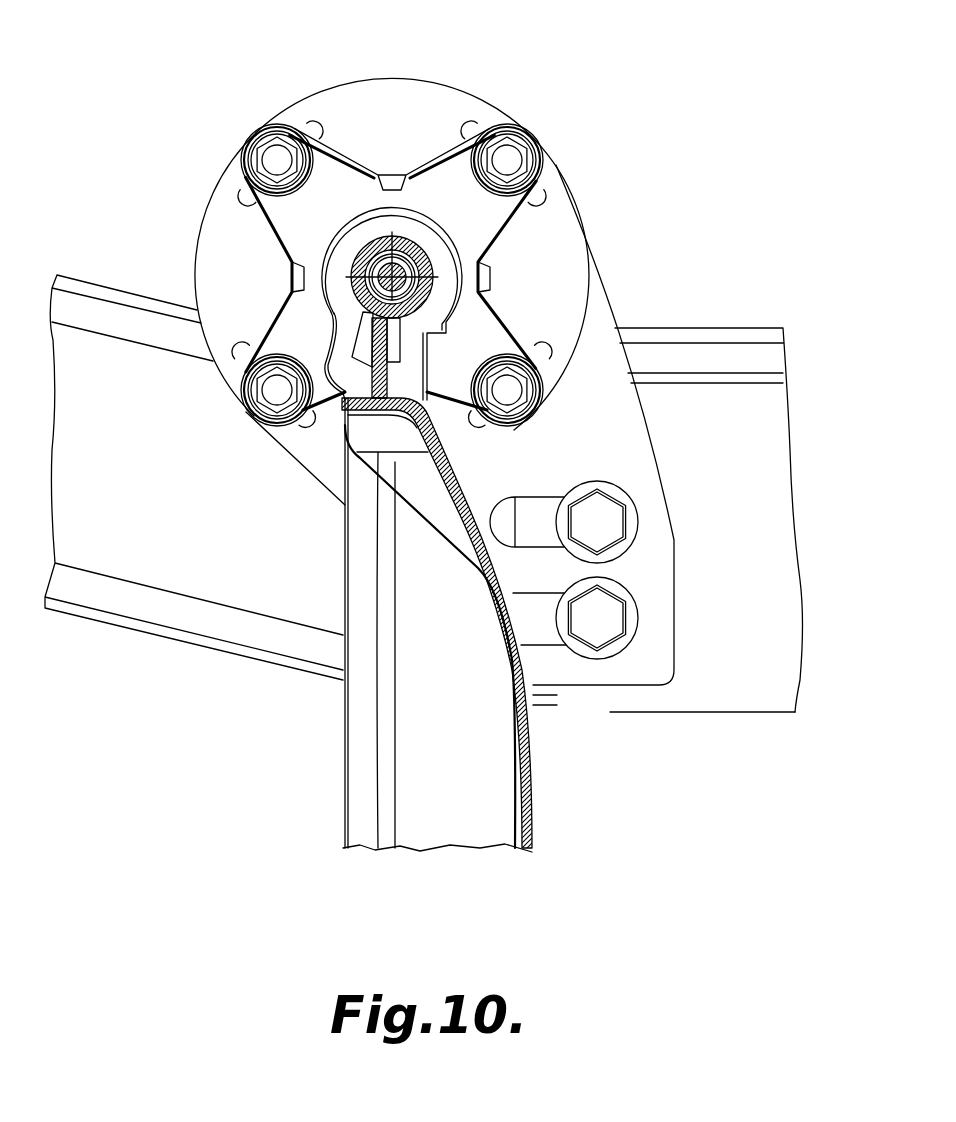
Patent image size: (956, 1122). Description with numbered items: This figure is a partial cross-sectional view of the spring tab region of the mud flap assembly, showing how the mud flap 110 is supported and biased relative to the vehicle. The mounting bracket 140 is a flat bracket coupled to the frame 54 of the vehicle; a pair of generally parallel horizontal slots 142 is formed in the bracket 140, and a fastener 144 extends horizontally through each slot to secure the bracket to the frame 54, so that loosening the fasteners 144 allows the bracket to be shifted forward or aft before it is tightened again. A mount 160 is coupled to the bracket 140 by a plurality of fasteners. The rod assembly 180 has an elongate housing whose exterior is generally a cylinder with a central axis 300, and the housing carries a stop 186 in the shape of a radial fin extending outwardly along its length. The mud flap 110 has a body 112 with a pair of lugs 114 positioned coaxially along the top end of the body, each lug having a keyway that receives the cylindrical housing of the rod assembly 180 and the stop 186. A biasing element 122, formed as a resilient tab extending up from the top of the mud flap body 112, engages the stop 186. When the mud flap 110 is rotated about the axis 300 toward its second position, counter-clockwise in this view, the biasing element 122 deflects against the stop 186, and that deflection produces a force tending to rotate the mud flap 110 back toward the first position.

The frame 54 is at (113, 294).
The mud flap 110 is at (344, 752).
The body 112 is at (532, 802).
The lugs 114 is at (330, 233).
The biasing element 122 is at (306, 417).
The mounting bracket 140 is at (344, 84).
The horizontal slots 142 is at (540, 497).
The fastener 144 is at (621, 517).
The mount 160 is at (427, 164).
The rod assembly 180 is at (427, 243).
The stop 186 is at (400, 343).
The central axis 300 is at (400, 271).